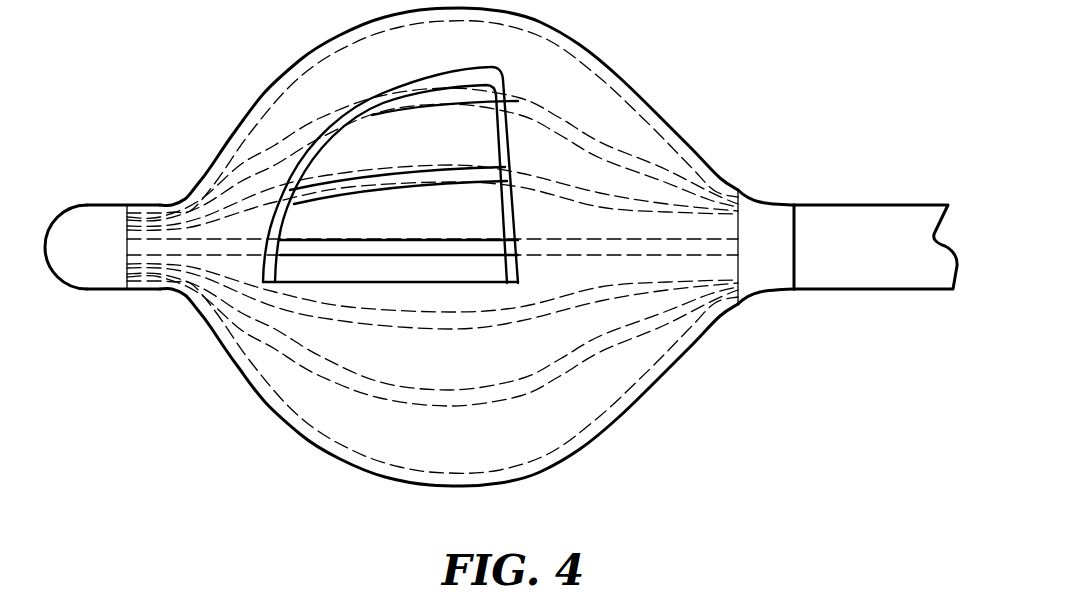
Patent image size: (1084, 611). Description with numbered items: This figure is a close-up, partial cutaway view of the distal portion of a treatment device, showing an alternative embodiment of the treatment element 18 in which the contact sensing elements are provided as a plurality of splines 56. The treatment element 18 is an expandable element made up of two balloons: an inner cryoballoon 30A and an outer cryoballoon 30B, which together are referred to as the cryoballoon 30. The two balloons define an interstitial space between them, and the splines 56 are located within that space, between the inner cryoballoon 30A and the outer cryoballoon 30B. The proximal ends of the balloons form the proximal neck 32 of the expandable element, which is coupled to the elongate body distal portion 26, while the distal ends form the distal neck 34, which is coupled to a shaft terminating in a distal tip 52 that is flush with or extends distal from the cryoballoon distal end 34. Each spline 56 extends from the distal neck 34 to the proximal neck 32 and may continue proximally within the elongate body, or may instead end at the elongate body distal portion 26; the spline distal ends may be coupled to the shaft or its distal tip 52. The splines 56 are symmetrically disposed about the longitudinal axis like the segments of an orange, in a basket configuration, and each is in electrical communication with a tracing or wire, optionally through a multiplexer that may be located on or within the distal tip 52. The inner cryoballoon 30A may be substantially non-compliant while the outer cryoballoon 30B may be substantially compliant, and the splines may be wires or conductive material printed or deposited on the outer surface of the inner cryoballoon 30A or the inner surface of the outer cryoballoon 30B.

The treatment element 18 is at (247, 409).
The elongate body distal portion 26 is at (905, 205).
The cryoballoon 30 is at (432, 247).
The inner cryoballoon 30A is at (454, 265).
The outer cryoballoon 30B is at (626, 84).
The proximal neck 32 is at (761, 201).
The distal neck 34 is at (156, 203).
The distal tip 52 is at (73, 267).
The splines 56 is at (417, 177).